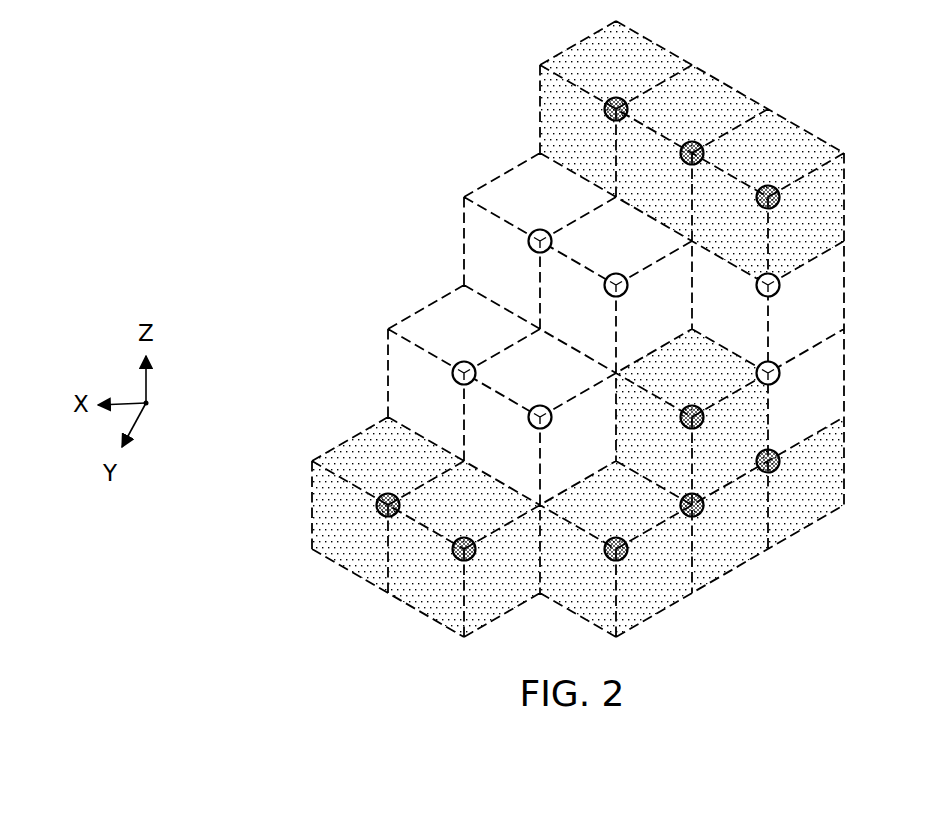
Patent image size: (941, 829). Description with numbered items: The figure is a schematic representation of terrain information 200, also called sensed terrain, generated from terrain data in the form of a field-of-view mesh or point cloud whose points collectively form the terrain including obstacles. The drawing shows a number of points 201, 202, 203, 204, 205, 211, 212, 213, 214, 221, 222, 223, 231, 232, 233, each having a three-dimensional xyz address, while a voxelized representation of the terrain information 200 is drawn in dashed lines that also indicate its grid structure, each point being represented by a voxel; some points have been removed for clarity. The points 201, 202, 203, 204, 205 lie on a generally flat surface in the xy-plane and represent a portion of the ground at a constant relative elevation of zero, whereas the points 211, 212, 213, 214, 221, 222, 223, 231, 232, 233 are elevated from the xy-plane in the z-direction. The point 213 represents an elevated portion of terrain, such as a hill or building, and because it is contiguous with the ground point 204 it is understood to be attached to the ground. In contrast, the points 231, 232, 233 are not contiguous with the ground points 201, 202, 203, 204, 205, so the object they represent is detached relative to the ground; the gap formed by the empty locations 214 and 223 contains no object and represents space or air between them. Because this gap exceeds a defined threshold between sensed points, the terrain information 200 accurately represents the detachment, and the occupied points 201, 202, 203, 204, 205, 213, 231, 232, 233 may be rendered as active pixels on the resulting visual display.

The terrain information 200 is at (372, 147).
The point 201 is at (383, 511).
The point 202 is at (458, 558).
The point 203 is at (611, 557).
The point 204 is at (705, 511).
The point 205 is at (782, 464).
The point 211 is at (465, 362).
The point 212 is at (541, 406).
The point 213 is at (689, 406).
The point 214 is at (781, 376).
The point 221 is at (541, 230).
The point 222 is at (617, 274).
The point 223 is at (781, 285).
The point 231 is at (618, 98).
The point 232 is at (694, 141).
The point 233 is at (770, 185).